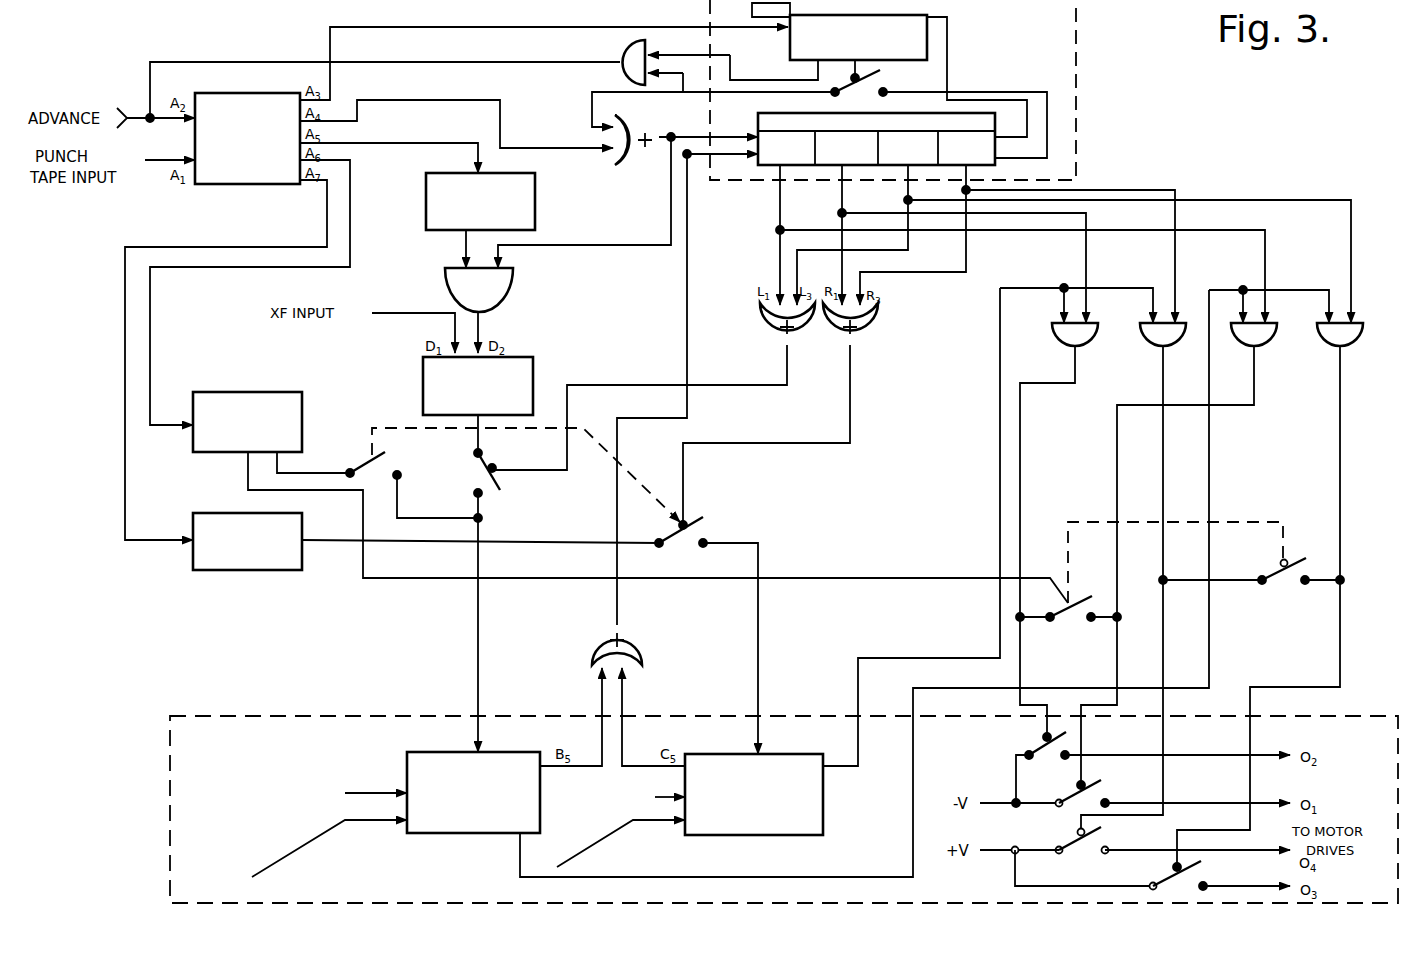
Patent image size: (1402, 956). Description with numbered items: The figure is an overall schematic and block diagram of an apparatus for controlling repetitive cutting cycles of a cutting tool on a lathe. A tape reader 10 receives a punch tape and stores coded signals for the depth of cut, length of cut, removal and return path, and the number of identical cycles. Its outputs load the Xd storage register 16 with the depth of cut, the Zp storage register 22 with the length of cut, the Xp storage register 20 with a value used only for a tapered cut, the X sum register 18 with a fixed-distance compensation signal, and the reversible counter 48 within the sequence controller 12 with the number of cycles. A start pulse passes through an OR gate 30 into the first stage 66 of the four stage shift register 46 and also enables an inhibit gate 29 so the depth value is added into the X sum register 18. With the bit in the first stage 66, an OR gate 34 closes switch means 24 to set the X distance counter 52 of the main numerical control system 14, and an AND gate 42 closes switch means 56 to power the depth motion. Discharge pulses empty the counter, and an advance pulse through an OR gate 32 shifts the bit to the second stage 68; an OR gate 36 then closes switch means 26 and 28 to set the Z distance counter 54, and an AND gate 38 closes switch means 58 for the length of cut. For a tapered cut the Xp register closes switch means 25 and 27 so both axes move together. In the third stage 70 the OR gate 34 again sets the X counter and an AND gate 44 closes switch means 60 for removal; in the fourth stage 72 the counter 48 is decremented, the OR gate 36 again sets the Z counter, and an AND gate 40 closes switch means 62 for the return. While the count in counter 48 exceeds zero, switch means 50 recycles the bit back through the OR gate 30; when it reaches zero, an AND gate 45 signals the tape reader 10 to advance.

The tape reader 10 is at (255, 93).
The sequence controller 12 is at (1080, 25).
The main numerical control system 14 is at (241, 712).
The Xd storage register 16 is at (426, 212).
The X sum register 18 is at (423, 382).
The Xp storage register 20 is at (302, 405).
The Zp storage register 22 is at (266, 572).
The controlled switch means 24 is at (478, 476).
The controlled switch means 25 is at (1070, 622).
The controlled switch means 26 is at (385, 456).
The controlled switch means 27 is at (1283, 585).
The controlled switch means 28 is at (679, 548).
The inhibit gate 29 is at (512, 298).
The OR gate 30 is at (640, 168).
The OR gate 32 is at (596, 632).
The OR gate 34 is at (763, 333).
The OR gate 36 is at (879, 330).
The AND gate 38 is at (1052, 338).
The AND gate 40 is at (1150, 355).
The AND gate 42 is at (1242, 355).
The AND gate 44 is at (1330, 355).
The AND gate 45 is at (620, 73).
The four stage shift register 46 is at (765, 112).
The reversible counter 48 is at (930, 22).
The controlled switch means 50 is at (868, 94).
The X distance (discharge) counter 52 is at (430, 750).
The Z distance (discharge) counter 54 is at (812, 838).
The controlled switch means 56 is at (1072, 797).
The controlled switch means 58 is at (1033, 747).
The controlled switch means 60 is at (1166, 882).
The controlled switch means 62 is at (1072, 844).
The first stage 66 is at (771, 167).
The second stage 68 is at (829, 167).
The third stage 70 is at (891, 165).
The fourth stage 72 is at (989, 167).